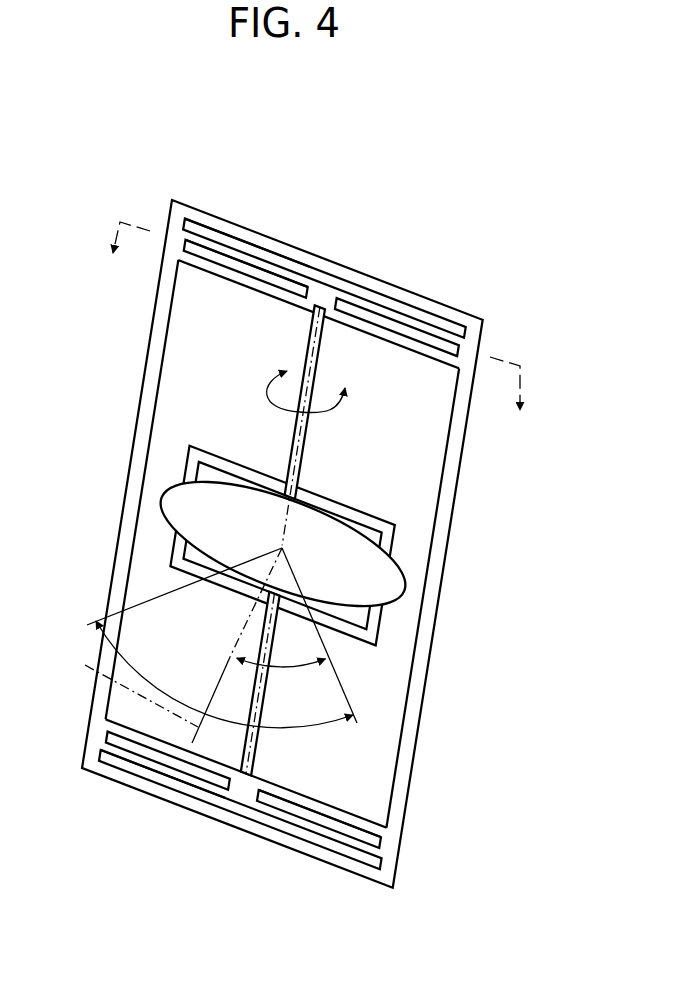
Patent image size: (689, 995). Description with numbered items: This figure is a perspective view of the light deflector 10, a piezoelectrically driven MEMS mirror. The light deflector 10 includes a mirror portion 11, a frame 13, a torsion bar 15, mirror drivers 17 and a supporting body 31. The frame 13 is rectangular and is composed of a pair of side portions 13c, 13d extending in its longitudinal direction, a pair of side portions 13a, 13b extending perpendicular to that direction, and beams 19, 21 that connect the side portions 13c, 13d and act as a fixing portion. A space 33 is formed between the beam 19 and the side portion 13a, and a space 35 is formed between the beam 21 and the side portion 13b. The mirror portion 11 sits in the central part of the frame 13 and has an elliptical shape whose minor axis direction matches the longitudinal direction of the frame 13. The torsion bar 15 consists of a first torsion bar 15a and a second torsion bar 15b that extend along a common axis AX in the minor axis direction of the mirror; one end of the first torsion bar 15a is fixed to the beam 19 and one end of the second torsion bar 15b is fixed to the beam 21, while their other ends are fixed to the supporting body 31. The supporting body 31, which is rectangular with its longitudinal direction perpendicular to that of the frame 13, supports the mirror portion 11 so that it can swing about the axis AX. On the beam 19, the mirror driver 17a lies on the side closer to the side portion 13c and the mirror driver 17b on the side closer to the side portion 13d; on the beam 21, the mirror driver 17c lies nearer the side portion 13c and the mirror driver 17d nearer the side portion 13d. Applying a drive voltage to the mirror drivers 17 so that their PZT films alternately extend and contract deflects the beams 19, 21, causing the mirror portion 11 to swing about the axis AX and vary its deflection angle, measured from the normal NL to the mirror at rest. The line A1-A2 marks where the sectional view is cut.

The light deflector 10 is at (484, 171).
The mirror portion 11 is at (224, 486).
The frame 13 is at (469, 302).
The side portion 13a is at (336, 266).
The side portion 13b is at (243, 832).
The side portion 13c is at (155, 340).
The side portion 13d is at (465, 483).
The torsion bar 15 is at (310, 549).
The first torsion bar 15a is at (312, 349).
The second torsion bar 15b is at (258, 750).
The mirror drivers 17 is at (283, 538).
The mirror driver 17a is at (248, 268).
The mirror driver 17b is at (400, 328).
The mirror driver 17c is at (180, 768).
The mirror driver 17d is at (321, 822).
The beam 19 is at (205, 238).
The beam 21 is at (137, 737).
The supporting body 31 is at (349, 489).
The space 33 is at (226, 241).
The space 35 is at (125, 766).
The axis AX is at (312, 431).
The normal NL is at (93, 668).
The line A1-A2 A1 is at (123, 255).
The line A1- A2 is at (512, 402).